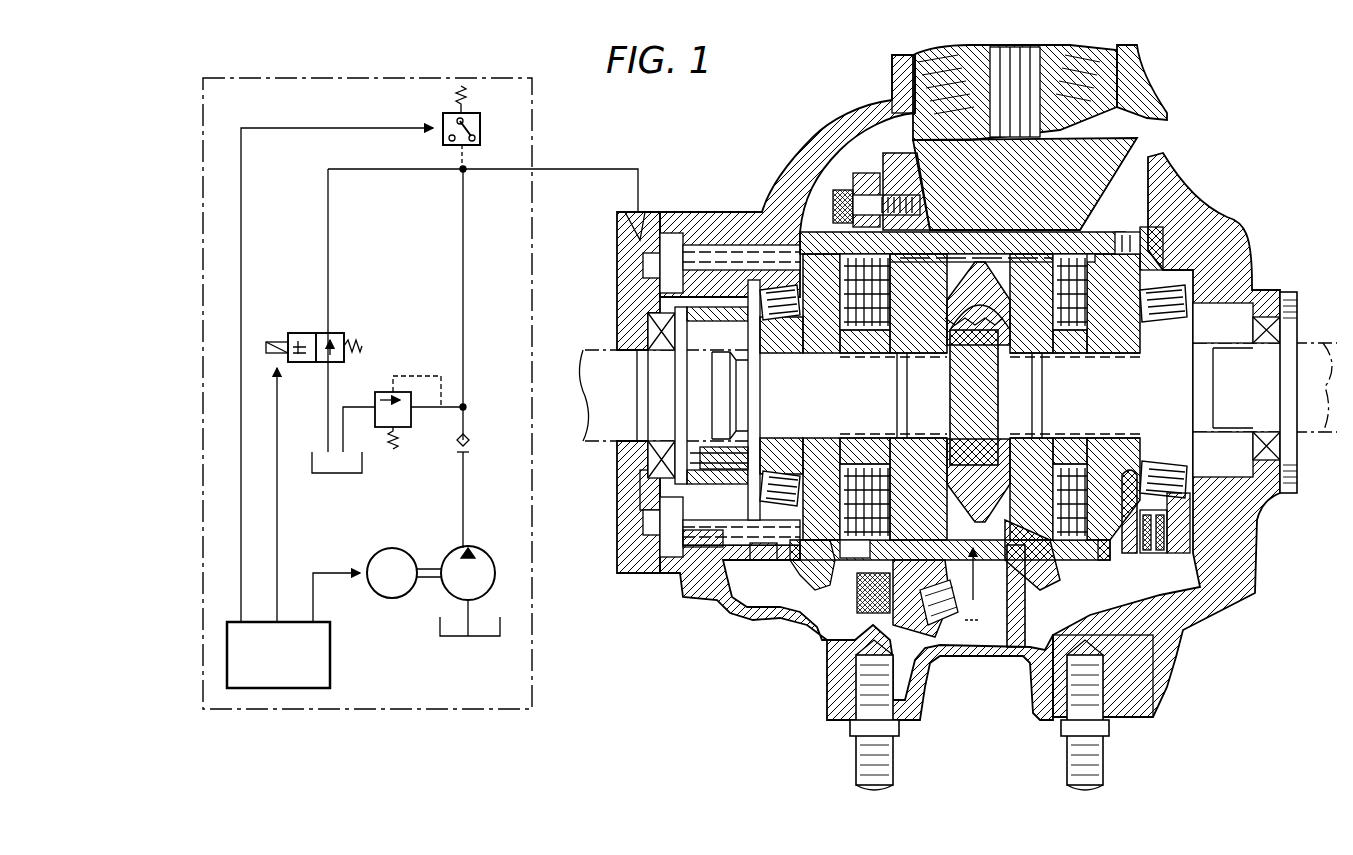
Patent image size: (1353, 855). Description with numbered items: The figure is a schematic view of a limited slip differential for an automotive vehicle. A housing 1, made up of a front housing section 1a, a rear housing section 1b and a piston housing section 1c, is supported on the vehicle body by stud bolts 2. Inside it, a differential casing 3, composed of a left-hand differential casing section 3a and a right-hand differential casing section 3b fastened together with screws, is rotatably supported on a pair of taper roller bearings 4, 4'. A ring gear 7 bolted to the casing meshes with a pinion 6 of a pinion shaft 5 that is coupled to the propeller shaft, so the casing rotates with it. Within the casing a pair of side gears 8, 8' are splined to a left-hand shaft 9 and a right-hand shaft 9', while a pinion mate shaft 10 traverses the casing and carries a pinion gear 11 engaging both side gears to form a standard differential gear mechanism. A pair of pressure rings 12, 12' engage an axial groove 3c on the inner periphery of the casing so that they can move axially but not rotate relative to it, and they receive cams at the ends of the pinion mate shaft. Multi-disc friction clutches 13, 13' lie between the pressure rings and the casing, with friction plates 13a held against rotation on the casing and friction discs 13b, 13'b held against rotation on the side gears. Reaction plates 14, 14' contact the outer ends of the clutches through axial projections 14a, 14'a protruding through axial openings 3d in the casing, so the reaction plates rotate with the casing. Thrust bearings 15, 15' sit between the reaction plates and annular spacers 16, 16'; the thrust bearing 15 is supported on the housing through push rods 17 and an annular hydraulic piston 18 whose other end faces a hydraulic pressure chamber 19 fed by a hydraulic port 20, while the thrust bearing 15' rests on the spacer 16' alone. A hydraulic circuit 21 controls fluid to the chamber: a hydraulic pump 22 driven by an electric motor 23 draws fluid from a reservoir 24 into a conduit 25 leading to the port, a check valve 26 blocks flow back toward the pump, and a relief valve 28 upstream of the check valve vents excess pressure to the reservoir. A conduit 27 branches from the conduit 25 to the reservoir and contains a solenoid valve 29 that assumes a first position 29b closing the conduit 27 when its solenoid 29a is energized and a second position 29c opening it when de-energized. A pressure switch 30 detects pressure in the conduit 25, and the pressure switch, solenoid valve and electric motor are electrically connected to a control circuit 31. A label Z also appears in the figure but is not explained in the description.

The housing 1 is at (1200, 630).
The front housing section 1a is at (893, 98).
The rear housing section 1b is at (1035, 722).
The piston housing section 1c is at (637, 497).
The stud bolts 2 is at (856, 760).
The differential casing 3 is at (800, 600).
The left-hand differential casing section 3a is at (838, 562).
The right-hand differential casing section 3b is at (1137, 560).
The axial groove 3c is at (985, 256).
The axial openings 3d is at (778, 328).
The taper roller bearing 4 is at (704, 400).
The taper roller bearing 4' is at (1245, 392).
The pinion shaft 5 is at (985, 58).
The pinion 6 is at (1135, 152).
The ring gear 7 is at (893, 170).
The side gear 8 is at (893, 397).
The side gear 8' is at (1075, 397).
The left-hand shaft 9 is at (667, 368).
The right-hand shaft 9' is at (1265, 393).
The pinion mate shaft 10 is at (990, 573).
The pinion gear 11 is at (1025, 540).
The pressure ring 12 is at (970, 303).
The pressure ring 12' is at (978, 413).
The friction clutch 13 is at (809, 357).
The friction clutch 13' is at (1158, 362).
The friction plates 13a is at (843, 583).
The friction discs 13b is at (880, 575).
The friction discs 13'b is at (1042, 555).
The reaction plate 14 is at (868, 199).
The reaction plate 14' is at (1169, 219).
The axial projections 14a is at (838, 345).
The axial projections 14'a is at (1101, 397).
The thrust bearing 15 is at (731, 559).
The thrust bearing 15' is at (1234, 528).
The annular spacer 16 is at (719, 461).
The annular spacer 16' is at (1220, 531).
The push rods 17 is at (703, 245).
The annular hydraulic piston 18 is at (643, 268).
The hydraulic pressure chamber 19 is at (643, 546).
The hydraulic port 20 is at (630, 212).
The hydraulic circuit 21 is at (372, 78).
The hydraulic pump 22 is at (487, 553).
The electric motor 23 is at (398, 548).
The reservoir 24 is at (364, 465).
The conduit 25 is at (491, 173).
The check valve 26 is at (470, 440).
The conduit 27 is at (328, 222).
The relief valve 28 is at (416, 376).
The solenoid valve 29 is at (302, 333).
The solenoid 29a is at (268, 342).
The first position 29b is at (306, 362).
The second position 29c is at (339, 362).
The pressure switch 30 is at (443, 119).
The control circuit 31 is at (332, 660).
The axis direction Z is at (973, 606).